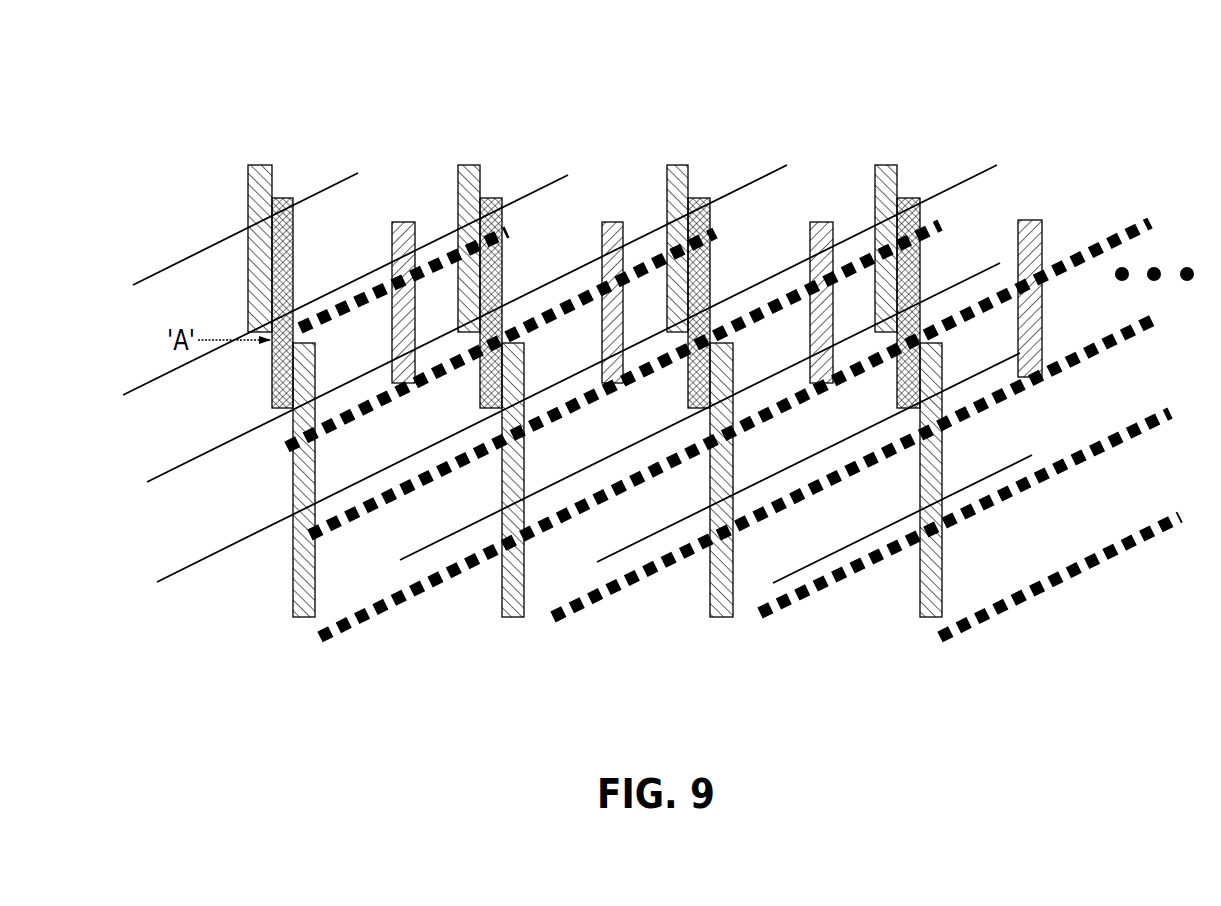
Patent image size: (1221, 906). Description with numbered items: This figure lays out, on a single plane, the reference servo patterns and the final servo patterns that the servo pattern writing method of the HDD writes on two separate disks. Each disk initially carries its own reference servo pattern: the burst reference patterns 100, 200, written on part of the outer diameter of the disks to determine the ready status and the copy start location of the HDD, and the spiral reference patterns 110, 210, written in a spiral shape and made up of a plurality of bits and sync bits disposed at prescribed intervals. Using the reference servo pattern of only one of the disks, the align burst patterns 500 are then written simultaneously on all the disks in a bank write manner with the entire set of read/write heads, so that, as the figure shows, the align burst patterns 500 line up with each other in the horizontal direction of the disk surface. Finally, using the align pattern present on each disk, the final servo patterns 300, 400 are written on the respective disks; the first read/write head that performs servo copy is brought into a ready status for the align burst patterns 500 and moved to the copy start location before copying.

The burst reference pattern 100 is at (665, 164).
The spiral reference pattern 110 is at (778, 163).
The burst reference pattern 200 is at (1017, 217).
The spiral reference pattern 210 is at (946, 222).
The final servo pattern 300 is at (617, 537).
The final servo pattern 400 is at (916, 618).
The align burst pattern 500 is at (296, 411).